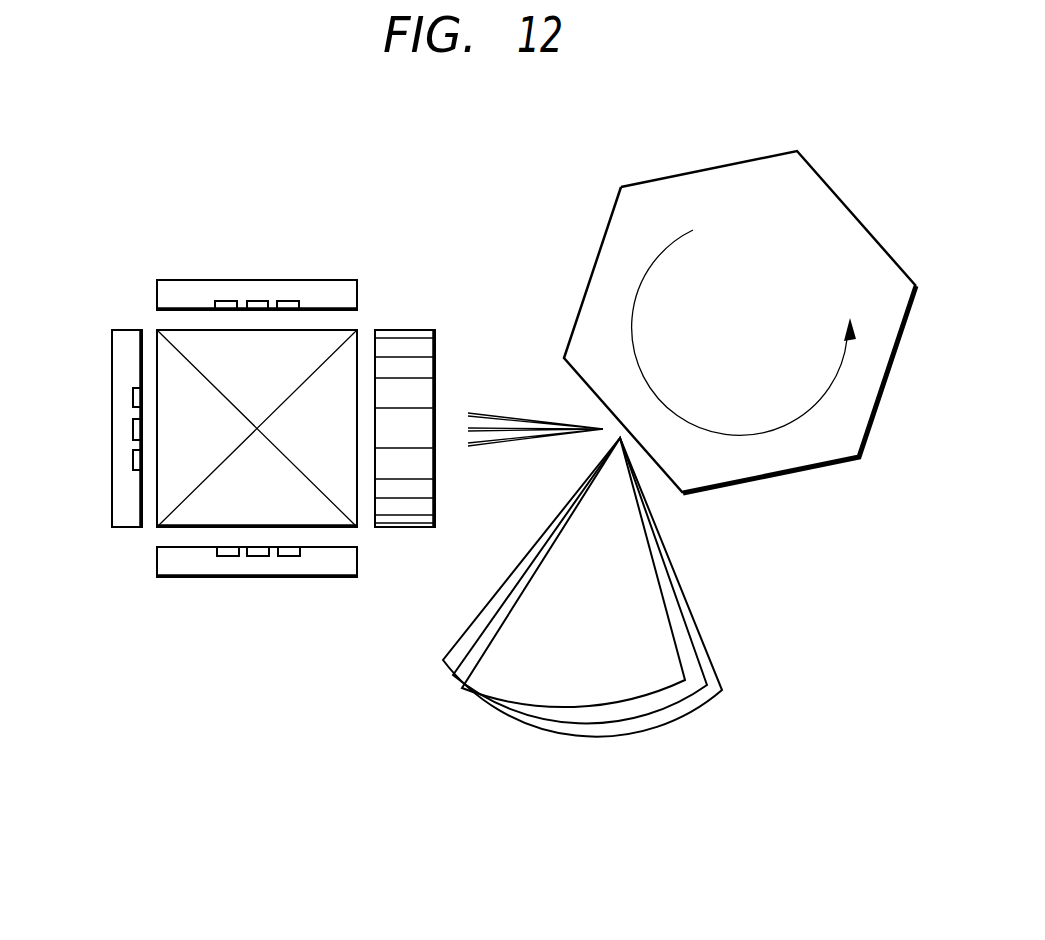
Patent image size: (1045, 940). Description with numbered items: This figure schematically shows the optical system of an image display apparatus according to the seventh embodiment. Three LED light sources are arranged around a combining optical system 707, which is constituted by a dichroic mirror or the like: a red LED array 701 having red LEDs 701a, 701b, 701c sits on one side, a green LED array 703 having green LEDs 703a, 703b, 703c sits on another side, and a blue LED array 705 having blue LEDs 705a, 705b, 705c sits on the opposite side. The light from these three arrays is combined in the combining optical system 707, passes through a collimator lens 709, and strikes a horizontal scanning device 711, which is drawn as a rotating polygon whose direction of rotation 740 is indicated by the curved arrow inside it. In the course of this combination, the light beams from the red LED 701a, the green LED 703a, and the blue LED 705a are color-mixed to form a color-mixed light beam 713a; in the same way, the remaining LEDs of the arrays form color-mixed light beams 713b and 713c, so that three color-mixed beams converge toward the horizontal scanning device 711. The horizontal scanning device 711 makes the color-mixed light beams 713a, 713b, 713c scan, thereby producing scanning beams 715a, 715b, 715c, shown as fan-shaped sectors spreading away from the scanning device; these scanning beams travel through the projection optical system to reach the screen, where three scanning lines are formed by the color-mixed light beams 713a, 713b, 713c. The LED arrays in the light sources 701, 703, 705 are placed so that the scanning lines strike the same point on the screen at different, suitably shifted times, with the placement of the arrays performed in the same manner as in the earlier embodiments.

The red LED array 701 is at (330, 278).
The red LED 701a is at (227, 300).
The red LED 701b is at (259, 300).
The red LED 701c is at (293, 300).
The green LED array 703 is at (112, 498).
The green LED 703a is at (133, 397).
The green LED 703b is at (133, 431).
The green LED 703c is at (133, 463).
The blue LED array 705 is at (330, 579).
The blue LED 705a is at (228, 557).
The blue LED 705b is at (258, 557).
The blue LED 705c is at (293, 557).
The combining optical system 707 is at (353, 328).
The collimator lens 709 is at (410, 327).
The horizontal scanning device 711 is at (720, 164).
The color-mixed light beam 713a is at (538, 420).
The color-mixed light beam 713b is at (493, 427).
The color-mixed light beam 713c is at (515, 444).
The scanning beam 715a is at (505, 694).
The scanning beam 715b is at (660, 703).
The scanning beam 715c is at (578, 734).
The direction of rotation 740 is at (633, 277).